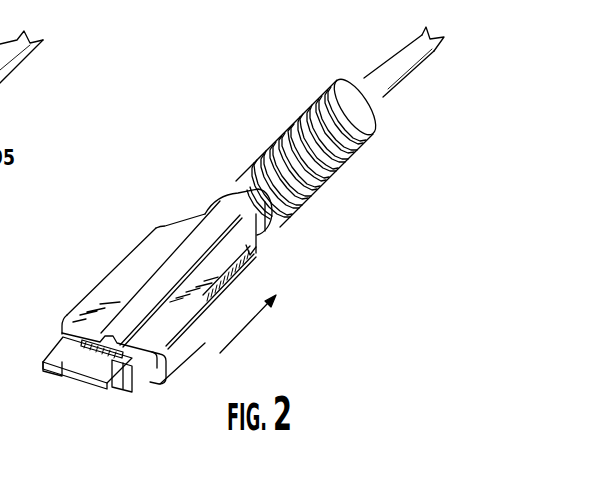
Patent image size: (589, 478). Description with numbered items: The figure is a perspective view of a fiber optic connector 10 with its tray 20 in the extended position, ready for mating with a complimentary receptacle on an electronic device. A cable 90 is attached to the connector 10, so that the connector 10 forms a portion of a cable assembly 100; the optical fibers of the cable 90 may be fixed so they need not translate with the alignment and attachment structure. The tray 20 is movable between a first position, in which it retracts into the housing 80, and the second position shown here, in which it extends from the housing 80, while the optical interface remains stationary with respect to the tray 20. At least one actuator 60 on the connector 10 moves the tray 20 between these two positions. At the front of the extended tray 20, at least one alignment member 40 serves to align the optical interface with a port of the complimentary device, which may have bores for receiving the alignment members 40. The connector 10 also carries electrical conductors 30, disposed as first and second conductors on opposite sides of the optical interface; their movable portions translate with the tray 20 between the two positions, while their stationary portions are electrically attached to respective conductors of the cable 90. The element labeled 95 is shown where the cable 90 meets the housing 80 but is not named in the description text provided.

The cable assembly 100 is at (196, 90).
The cable 90 is at (386, 50).
The fiber optic connector 10 is at (197, 212).
The tray 20 is at (140, 377).
The electrical conductors 30 is at (45, 367).
The alignment member 40 is at (100, 381).
The actuator 60 is at (183, 352).
The housing 80 is at (250, 255).
The strain relief 95 is at (374, 136).